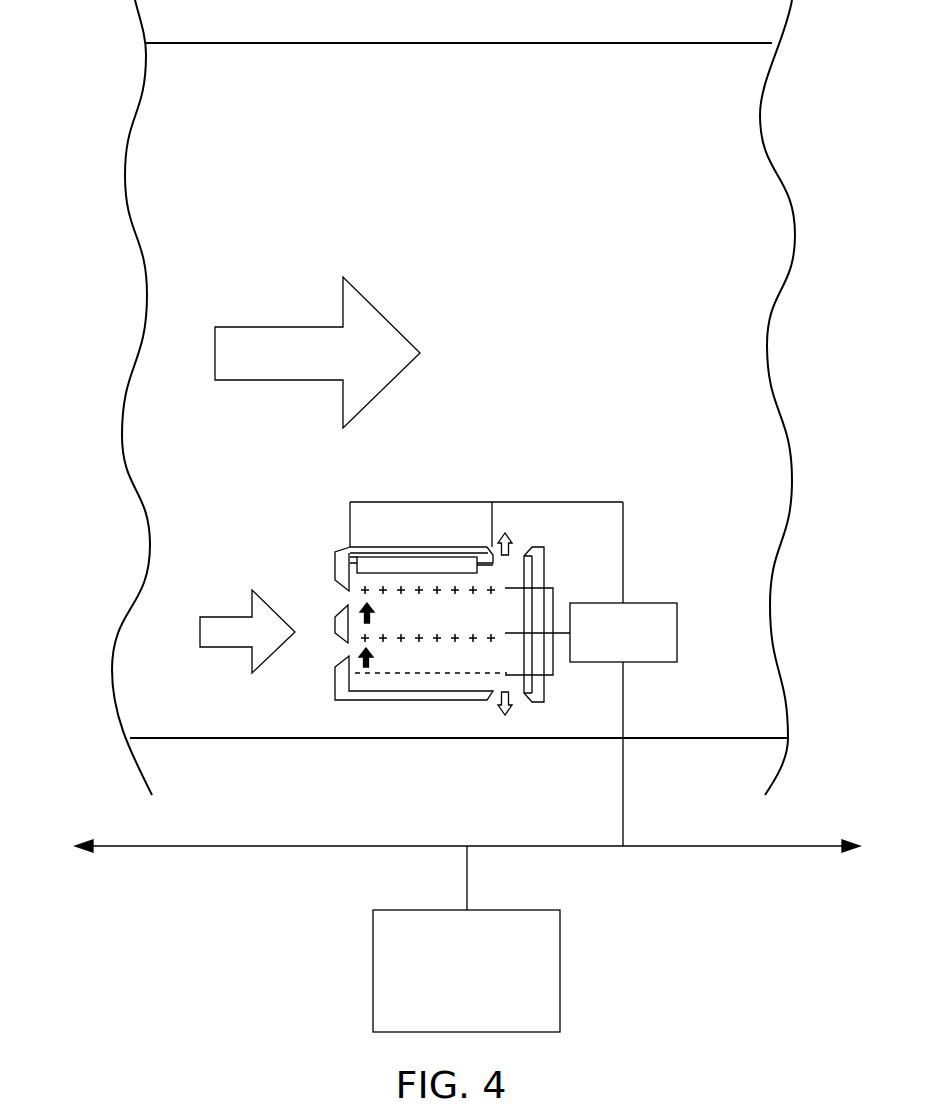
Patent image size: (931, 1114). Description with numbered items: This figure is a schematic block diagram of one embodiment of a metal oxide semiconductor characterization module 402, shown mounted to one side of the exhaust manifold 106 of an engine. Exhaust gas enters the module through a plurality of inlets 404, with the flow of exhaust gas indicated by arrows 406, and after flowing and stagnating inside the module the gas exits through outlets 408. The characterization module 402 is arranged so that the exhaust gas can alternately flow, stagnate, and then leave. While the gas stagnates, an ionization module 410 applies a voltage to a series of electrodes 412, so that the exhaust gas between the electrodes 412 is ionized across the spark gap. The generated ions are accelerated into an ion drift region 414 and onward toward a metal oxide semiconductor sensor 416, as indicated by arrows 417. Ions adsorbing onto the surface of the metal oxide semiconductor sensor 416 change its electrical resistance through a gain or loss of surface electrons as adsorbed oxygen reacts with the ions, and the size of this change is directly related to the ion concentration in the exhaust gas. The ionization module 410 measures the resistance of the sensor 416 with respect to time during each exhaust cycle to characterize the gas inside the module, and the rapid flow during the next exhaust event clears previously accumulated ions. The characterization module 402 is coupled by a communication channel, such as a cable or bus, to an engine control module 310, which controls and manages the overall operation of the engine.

The exhaust manifold 106 is at (643, 43).
The engine control module 310 is at (450, 993).
The metal oxide semiconductor characterization module 402 is at (296, 510).
The inlets 404 is at (322, 597).
The arrows 406 is at (302, 364).
The outlets 408 is at (523, 533).
The ionization module 410 is at (607, 656).
The electrodes 412 is at (433, 660).
The ion drift region 414 is at (489, 626).
The metal oxide semiconductor sensor 416 is at (412, 567).
The arrows 417 is at (363, 605).